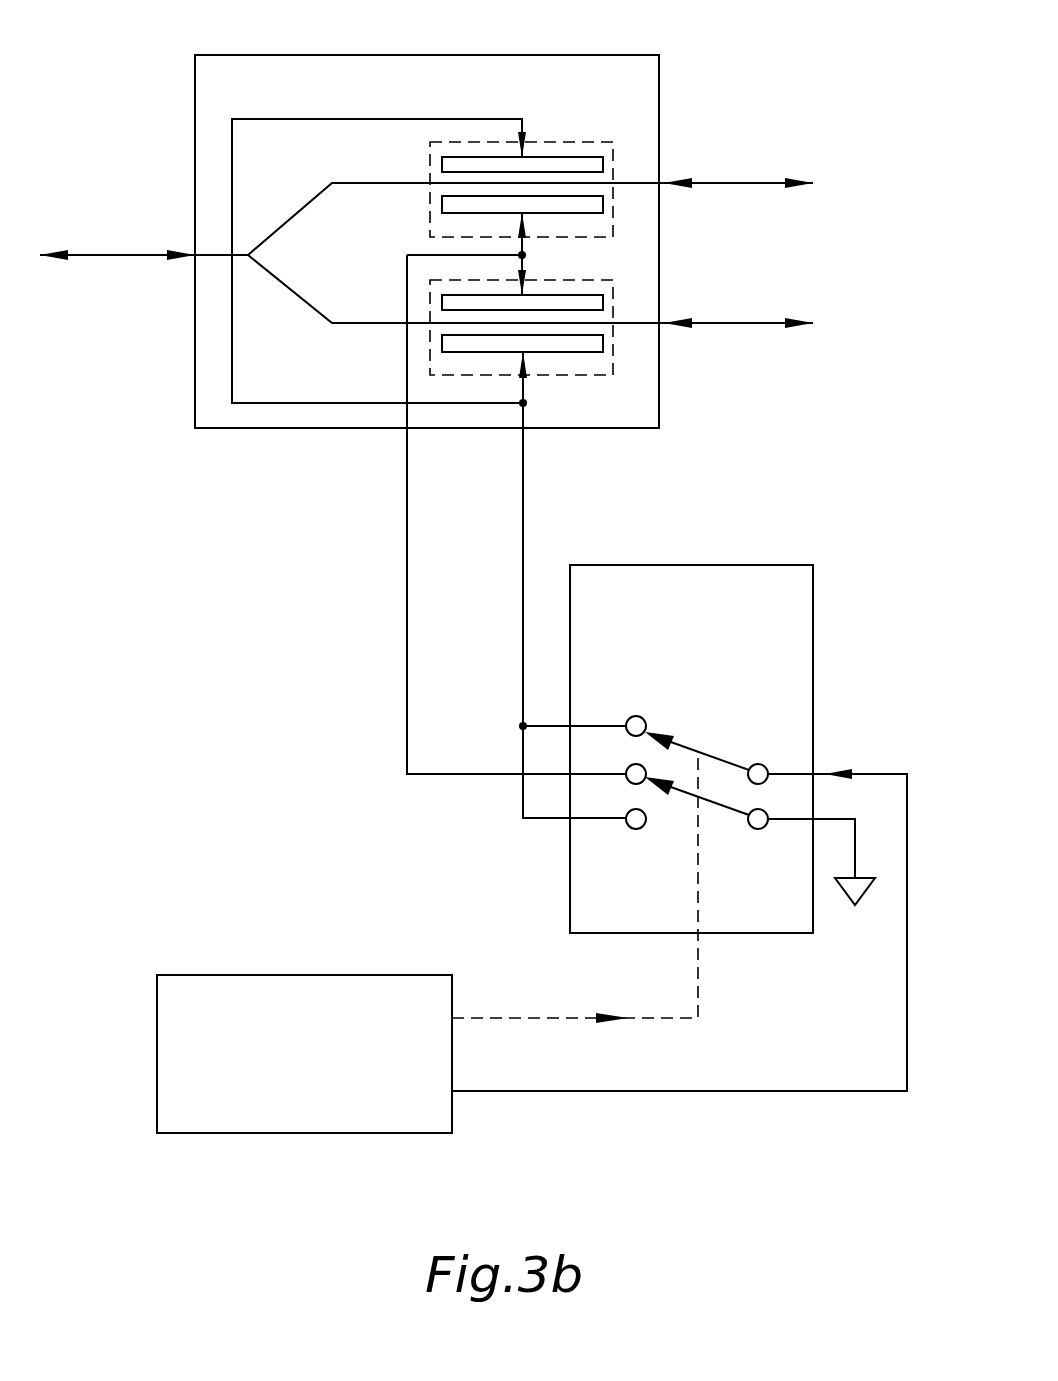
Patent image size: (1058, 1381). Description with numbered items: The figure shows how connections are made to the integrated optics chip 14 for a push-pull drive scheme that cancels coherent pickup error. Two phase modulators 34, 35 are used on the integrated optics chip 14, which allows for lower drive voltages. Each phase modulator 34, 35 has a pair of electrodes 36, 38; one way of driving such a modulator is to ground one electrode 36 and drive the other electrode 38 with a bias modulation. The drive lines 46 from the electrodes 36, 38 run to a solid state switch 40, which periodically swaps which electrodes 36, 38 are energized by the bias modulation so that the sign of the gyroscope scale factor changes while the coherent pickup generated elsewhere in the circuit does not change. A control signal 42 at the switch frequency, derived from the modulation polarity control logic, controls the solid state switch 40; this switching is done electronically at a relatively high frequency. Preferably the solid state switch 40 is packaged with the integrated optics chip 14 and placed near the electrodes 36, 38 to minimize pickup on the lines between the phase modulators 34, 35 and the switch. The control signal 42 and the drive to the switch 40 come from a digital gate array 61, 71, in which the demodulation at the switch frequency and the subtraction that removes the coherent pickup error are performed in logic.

The integrated optics chip 14 is at (426, 241).
The phase modulator 34 is at (600, 280).
The phase modulator 35 is at (600, 142).
The electrode 36 is at (442, 205).
The electrode 38 is at (442, 162).
The solid-state switch 40 is at (812, 597).
The control signal 42 is at (667, 1019).
The non reciprocal phase modulation 46 is at (407, 535).
The digital gate array 61 is at (333, 1089).
The demodulator 71 is at (427, 1133).